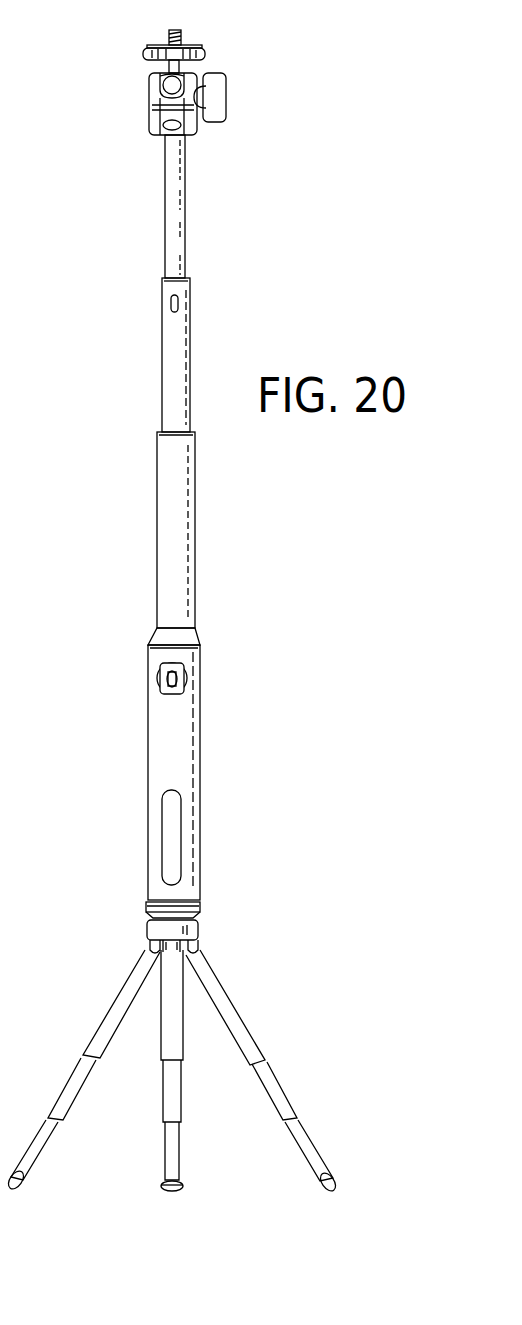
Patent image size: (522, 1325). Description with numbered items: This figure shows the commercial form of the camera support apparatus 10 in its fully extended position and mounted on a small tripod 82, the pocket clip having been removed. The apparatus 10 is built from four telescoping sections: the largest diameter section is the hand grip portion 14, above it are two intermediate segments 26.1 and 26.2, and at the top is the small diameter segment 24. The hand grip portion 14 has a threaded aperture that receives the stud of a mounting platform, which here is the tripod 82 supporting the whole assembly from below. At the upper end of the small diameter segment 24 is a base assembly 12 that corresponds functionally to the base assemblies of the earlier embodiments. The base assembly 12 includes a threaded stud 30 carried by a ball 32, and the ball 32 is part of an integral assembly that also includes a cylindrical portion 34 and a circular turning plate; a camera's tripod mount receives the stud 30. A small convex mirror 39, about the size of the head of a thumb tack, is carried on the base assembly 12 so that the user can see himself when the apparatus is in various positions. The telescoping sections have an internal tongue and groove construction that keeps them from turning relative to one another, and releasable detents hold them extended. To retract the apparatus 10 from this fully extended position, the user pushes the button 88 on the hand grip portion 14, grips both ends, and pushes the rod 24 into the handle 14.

The apparatus 10 is at (143, 512).
The base assembly 12 is at (246, 107).
The hand grip portion 14 is at (200, 762).
The small diameter segment 24 is at (185, 200).
The intermediate segment 26.1 is at (190, 330).
The intermediate segment 26.2 is at (195, 468).
The threaded stud 30 is at (168, 34).
The ball 32 is at (172, 84).
The cylindrical portion 34 is at (184, 64).
The convex mirror 39 is at (168, 125).
The tripod 82 is at (258, 978).
The button 88 is at (180, 678).